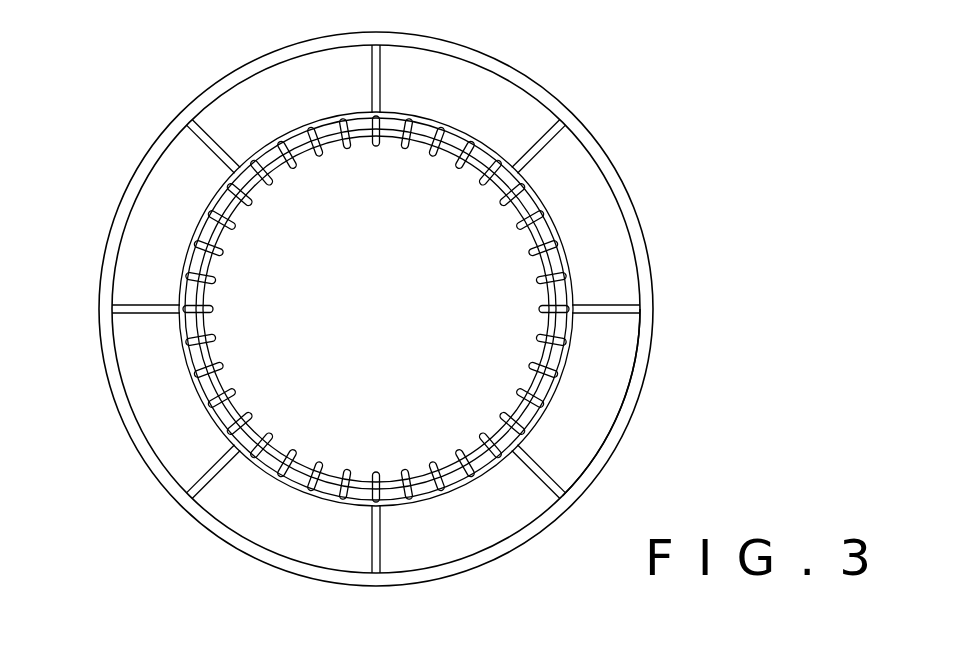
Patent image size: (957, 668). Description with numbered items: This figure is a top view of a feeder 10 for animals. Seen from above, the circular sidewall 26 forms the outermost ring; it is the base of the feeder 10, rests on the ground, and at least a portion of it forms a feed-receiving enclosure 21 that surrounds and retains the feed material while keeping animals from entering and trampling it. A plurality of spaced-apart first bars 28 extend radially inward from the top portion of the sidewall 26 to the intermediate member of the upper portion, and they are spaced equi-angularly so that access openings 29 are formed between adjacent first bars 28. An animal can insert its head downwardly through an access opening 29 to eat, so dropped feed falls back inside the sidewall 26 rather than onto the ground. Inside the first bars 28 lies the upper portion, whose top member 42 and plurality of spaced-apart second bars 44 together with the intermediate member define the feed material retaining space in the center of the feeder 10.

The feeder 10 is at (176, 529).
The feed-receiving enclosure 21 is at (445, 265).
The sidewall 26 is at (550, 95).
The first bars 28 is at (605, 300).
The access openings 29 is at (597, 407).
The top member 42 is at (188, 240).
The second bars 44 is at (200, 390).